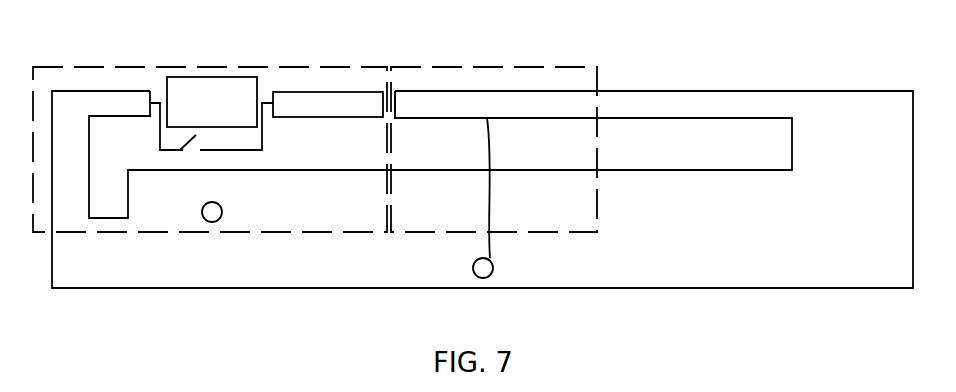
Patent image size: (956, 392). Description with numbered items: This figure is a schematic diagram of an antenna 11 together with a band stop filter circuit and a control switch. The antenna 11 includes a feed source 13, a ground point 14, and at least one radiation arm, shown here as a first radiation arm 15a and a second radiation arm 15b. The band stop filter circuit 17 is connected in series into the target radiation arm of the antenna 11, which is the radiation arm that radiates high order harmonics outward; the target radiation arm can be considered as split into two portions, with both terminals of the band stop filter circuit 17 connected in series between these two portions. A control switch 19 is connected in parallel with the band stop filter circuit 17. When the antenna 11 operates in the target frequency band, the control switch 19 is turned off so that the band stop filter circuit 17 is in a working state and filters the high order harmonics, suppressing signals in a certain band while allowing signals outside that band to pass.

The antenna 11 is at (815, 91).
The feed source 13 is at (493, 268).
The ground point 14 is at (216, 216).
The first radiation arm 15a is at (127, 91).
The second radiation arm 15b is at (555, 91).
The band stop filter circuit 17 is at (257, 76).
The control switch 19 is at (188, 140).